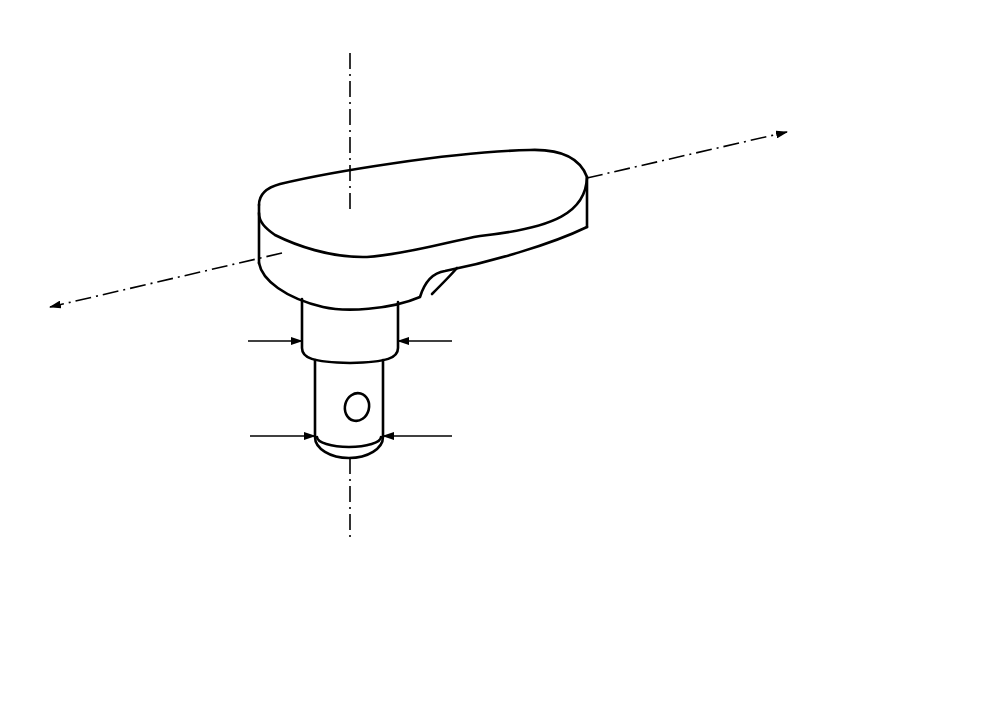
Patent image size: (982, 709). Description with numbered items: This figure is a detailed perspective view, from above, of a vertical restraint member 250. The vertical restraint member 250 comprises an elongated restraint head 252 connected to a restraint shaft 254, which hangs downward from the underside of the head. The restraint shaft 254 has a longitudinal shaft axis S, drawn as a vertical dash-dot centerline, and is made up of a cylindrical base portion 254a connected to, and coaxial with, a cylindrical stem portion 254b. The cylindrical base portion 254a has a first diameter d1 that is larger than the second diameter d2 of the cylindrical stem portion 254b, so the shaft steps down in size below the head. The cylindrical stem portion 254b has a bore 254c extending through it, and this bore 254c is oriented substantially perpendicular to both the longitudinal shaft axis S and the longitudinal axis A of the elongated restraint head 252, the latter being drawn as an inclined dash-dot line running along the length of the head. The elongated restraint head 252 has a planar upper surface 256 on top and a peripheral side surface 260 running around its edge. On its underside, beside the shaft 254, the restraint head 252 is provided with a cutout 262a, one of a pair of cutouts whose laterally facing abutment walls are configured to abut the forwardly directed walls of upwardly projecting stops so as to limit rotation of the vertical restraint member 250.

The vertical restraint member 250 is at (157, 136).
The elongated restraint head 252 is at (477, 147).
The restraint shaft 254 is at (195, 283).
The cylindrical base portion 254a is at (302, 325).
The cylindrical stem portion 254b is at (315, 407).
The bore 254c is at (357, 407).
The planar upper surface 256 is at (327, 207).
The peripheral side surface 260 is at (597, 200).
The cutout 262a is at (434, 283).
The first diameter d1 is at (364, 341).
The second diameter d2 is at (365, 433).
The longitudinal shaft axis S is at (341, 293).
The longitudinal axis of the elongated restraint head A is at (418, 206).